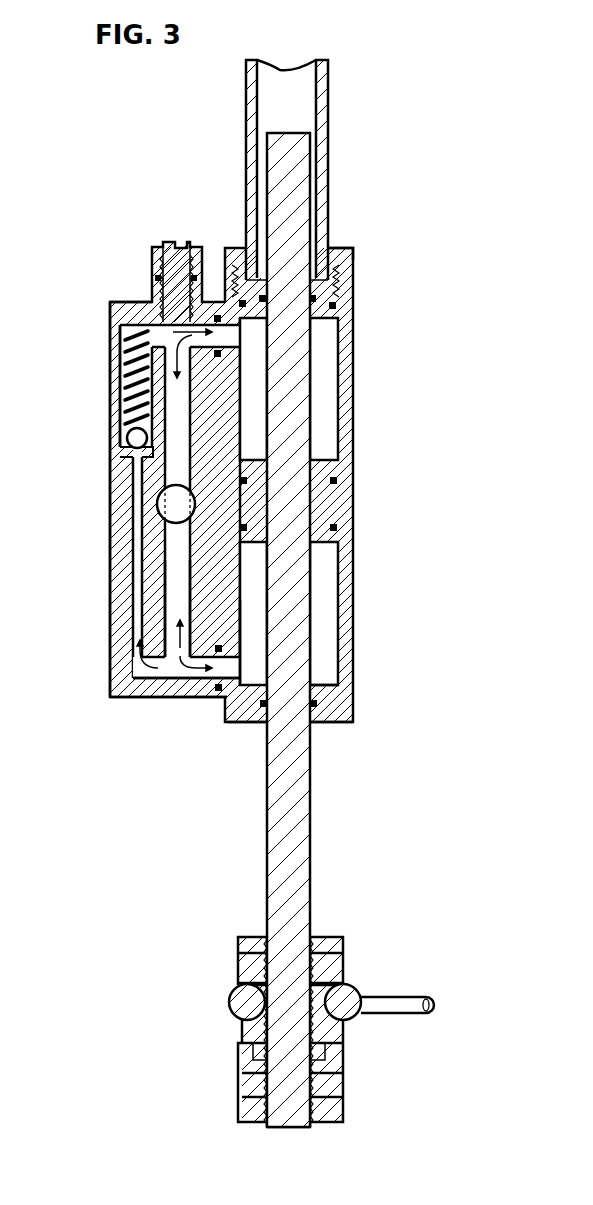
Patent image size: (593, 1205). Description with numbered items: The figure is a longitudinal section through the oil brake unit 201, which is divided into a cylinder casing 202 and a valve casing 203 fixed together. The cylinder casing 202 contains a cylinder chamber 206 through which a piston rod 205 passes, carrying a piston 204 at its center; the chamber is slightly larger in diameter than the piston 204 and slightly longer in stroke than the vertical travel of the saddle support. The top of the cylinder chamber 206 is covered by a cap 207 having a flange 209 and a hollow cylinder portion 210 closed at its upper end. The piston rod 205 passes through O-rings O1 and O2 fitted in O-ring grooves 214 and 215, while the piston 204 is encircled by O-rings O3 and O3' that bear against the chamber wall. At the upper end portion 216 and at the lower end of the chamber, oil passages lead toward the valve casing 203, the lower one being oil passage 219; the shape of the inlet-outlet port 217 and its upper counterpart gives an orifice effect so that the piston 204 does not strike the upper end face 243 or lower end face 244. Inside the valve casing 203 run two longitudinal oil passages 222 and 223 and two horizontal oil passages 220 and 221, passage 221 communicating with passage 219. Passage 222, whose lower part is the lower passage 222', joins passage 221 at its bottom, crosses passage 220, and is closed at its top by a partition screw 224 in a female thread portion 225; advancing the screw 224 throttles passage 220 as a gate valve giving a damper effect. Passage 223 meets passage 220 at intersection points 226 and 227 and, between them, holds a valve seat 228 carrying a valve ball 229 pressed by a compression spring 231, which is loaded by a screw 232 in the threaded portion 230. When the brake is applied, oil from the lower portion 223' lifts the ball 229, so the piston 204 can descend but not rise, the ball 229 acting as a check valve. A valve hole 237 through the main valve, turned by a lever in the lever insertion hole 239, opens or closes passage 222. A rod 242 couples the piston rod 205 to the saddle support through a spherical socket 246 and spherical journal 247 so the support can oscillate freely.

The oil brake unit 201 is at (370, 395).
The cylinder casing 202 is at (348, 642).
The valve casing 203 is at (140, 648).
The piston 204 is at (316, 512).
The piston rod 205 is at (292, 660).
The cylinder chamber 206 is at (325, 355).
The cap 207 is at (343, 247).
The flange 209 is at (354, 252).
The hollow cylinder portion 210 is at (330, 137).
The O-ring groove 214 is at (337, 305).
The O-ring groove 215 is at (330, 723).
The upper end portion 216 is at (216, 314).
The oil inlet-outlet port 217 is at (240, 723).
The oil passage 219 is at (243, 665).
The horizontal oil passage 220 is at (112, 352).
The horizontal oil passage 221 is at (190, 698).
The longitudinal oil passage 222 is at (135, 363).
The lower passage 222' is at (110, 608).
The longitudinal oil passage 223 is at (75, 386).
The lower portion of oil passage 223' is at (97, 608).
The partition screw 224 is at (172, 242).
The female thread portion 225 is at (153, 303).
The intersection point 226 is at (112, 332).
The intersection point 227 is at (137, 698).
The valve seat 228 is at (121, 454).
The valve ball 229 is at (127, 437).
The threaded portion 230 is at (120, 303).
The compression spring 231 is at (163, 395).
The screw 232 is at (137, 322).
The valve hole 237 is at (157, 508).
The lever insertion hole 239 is at (150, 527).
The rod 242 is at (130, 473).
The upper end face 243 is at (316, 302).
The lower end face 244 is at (356, 718).
The spherical socket 246 is at (232, 1012).
The spherical journal 247 is at (238, 977).
The O-ring O1 is at (323, 325).
The O-ring O2 is at (263, 723).
The O-ring O3 is at (327, 447).
The O-ring O3' is at (324, 545).